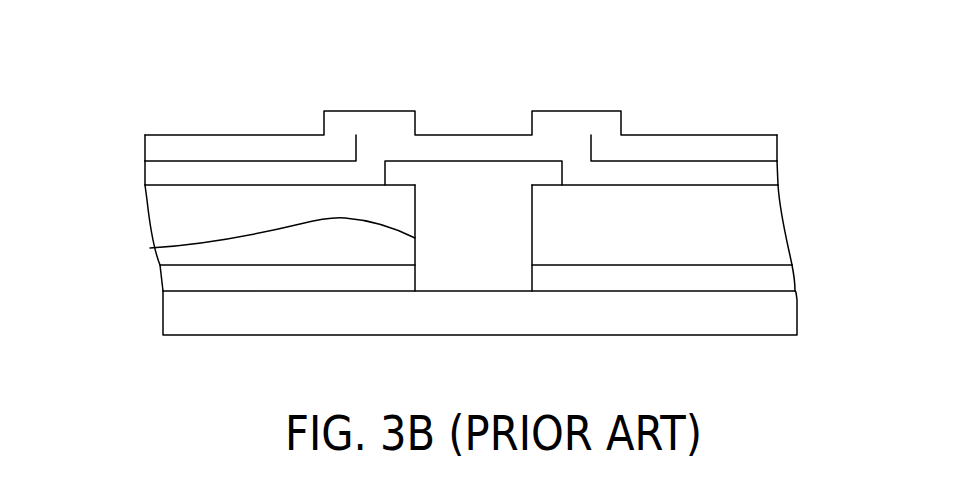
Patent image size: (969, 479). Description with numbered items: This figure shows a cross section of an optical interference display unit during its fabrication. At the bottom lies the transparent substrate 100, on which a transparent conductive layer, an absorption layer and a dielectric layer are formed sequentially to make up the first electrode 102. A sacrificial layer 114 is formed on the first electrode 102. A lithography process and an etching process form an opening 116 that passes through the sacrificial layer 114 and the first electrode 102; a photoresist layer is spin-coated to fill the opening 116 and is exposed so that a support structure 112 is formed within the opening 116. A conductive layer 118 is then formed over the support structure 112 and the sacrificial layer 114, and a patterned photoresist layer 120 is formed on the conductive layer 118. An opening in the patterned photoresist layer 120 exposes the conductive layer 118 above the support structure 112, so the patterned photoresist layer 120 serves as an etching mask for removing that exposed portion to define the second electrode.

The transparent substrate 100 is at (760, 323).
The first electrode 102 is at (760, 283).
The support structure 112 is at (479, 183).
The sacrificial layer 114 is at (763, 225).
The opening 116 is at (150, 248).
The conductive layer 118 is at (763, 177).
The patterned photoresist layer 120 is at (763, 147).